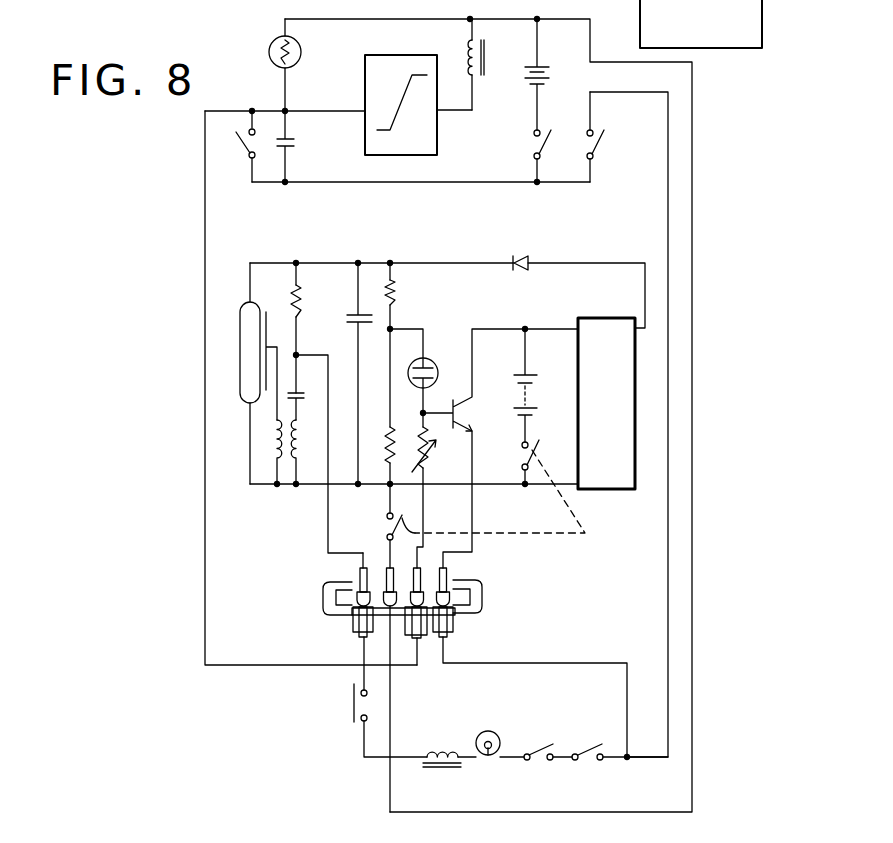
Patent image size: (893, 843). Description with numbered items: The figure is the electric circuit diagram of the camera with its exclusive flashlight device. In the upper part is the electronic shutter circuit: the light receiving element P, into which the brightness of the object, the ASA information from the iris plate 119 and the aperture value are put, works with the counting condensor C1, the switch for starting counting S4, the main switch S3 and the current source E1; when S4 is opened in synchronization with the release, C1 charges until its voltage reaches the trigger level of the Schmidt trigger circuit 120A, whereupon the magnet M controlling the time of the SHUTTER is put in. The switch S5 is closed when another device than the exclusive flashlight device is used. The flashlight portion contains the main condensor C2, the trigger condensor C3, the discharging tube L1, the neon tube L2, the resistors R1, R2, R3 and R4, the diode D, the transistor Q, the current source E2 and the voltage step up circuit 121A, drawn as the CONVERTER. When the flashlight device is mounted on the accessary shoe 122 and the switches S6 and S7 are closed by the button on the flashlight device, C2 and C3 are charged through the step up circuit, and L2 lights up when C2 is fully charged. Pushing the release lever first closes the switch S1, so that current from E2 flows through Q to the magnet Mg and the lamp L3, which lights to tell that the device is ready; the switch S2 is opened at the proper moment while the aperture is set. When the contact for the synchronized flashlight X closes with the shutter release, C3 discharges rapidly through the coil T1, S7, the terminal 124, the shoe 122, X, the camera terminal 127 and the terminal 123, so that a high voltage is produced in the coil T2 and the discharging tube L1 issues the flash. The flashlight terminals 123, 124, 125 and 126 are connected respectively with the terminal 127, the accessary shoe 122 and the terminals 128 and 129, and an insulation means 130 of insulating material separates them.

The iris plate 119 is at (307, 37).
The Schmidt trigger circuit 120A is at (401, 105).
The voltage step up circuit 121A is at (606, 403).
The accessary shoe 122 is at (311, 388).
The terminal of the flashlight device 123 is at (367, 570).
The terminal of the flashlight device 124 is at (386, 575).
The terminal of the flashlight device 125 is at (421, 570).
The terminal of the flashlight device 126 is at (448, 579).
The terminal on the camera 127 is at (377, 645).
The terminal 128 is at (433, 645).
The terminal 129 is at (449, 644).
The insulation means 130 is at (344, 627).
The light receiving element P is at (280, 65).
The switch S1 is at (620, 766).
The switch S2 is at (548, 766).
The main switch S3 is at (551, 156).
The switch for starting counting S4 is at (236, 146).
The switch S5 is at (604, 137).
The switch S6 is at (493, 486).
The switch S7 is at (402, 526).
The condensor for counting C1 is at (298, 146).
The main condensor C2 is at (353, 373).
The condensor for the trigger C3 is at (325, 454).
The resistor R1 is at (308, 328).
The resistor R2 is at (403, 345).
The resistor R3 is at (401, 448).
The variable resistor R4 is at (432, 490).
The discharging tube L1 is at (246, 373).
The neon tube L2 is at (425, 371).
The lamp L3 is at (500, 759).
The current source for the electronic shutter E1 is at (549, 74).
The current source for the flashlight device E2 is at (538, 385).
The coil T1 is at (306, 452).
The coil T2 is at (266, 452).
The diode D is at (520, 252).
The transistor Q is at (500, 448).
The magnet M is at (640, 22).
The magnet Mg is at (449, 777).
The contact for the synchronized flashlight X is at (372, 720).
The shutter SHUTTER is at (701, 24).
The converter CONVERTER is at (635, 382).